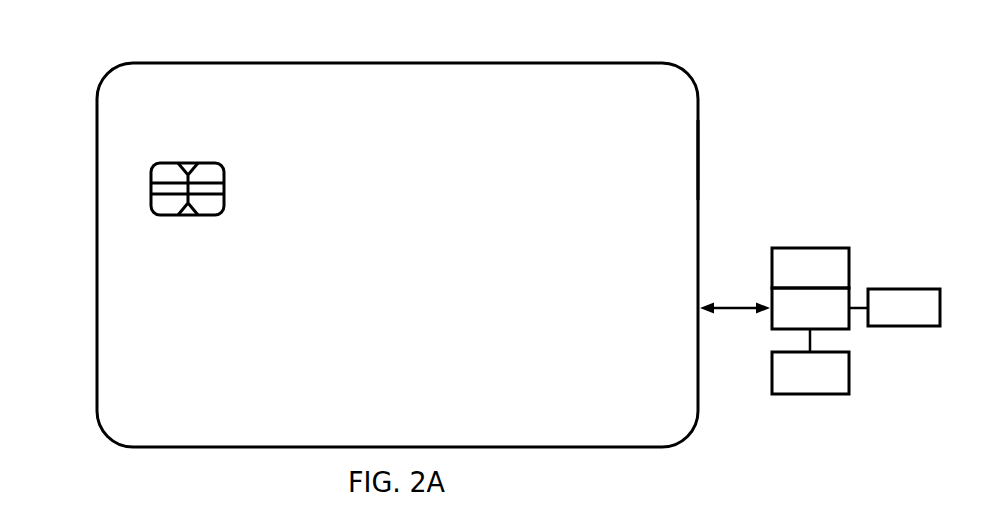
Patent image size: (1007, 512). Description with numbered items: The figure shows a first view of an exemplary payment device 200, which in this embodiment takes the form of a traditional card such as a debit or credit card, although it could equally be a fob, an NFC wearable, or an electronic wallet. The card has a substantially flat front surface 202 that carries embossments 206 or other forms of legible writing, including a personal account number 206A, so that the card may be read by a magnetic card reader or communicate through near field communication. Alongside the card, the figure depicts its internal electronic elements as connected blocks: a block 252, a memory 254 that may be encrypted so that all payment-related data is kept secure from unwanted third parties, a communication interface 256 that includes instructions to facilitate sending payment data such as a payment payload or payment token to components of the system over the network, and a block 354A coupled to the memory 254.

The payment device 200 is at (196, 63).
The front surface 202 is at (680, 173).
The personal account number (PAN) 206A is at (122, 302).
The embossments 206 is at (497, 373).
The processing circuitry 252 is at (810, 268).
The memory 254 is at (810, 308).
The communication interface 256 is at (810, 373).
The applet 354A is at (904, 307).